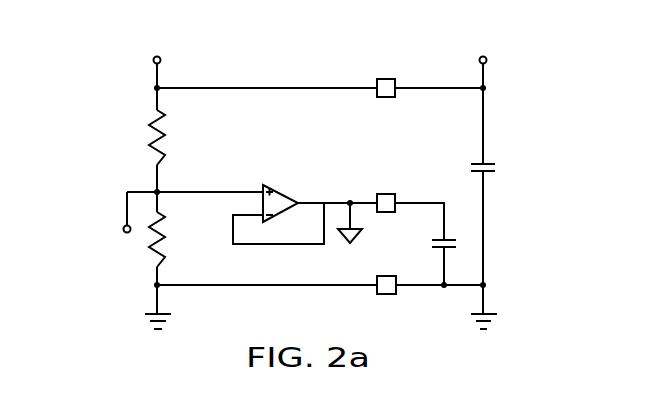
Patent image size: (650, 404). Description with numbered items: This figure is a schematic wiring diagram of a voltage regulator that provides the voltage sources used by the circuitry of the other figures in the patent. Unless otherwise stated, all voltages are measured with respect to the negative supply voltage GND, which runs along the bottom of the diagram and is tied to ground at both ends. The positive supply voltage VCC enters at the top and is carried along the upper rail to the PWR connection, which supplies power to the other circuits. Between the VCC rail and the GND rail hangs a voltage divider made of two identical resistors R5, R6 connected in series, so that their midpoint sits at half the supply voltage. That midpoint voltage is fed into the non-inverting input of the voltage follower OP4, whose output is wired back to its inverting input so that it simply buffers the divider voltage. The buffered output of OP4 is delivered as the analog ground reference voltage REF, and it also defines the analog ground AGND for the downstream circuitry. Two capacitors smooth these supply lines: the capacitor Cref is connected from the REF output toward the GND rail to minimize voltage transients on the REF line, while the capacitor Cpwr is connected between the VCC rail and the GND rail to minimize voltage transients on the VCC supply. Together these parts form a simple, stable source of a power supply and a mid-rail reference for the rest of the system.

The positive supply voltage VCC is at (319, 51).
The resistor R5 is at (142, 137).
The resistor R6 is at (170, 239).
The voltage follower OP4 is at (278, 207).
The PWR line PWR is at (379, 75).
The analog ground reference voltage REF is at (378, 193).
The negative supply voltage GND is at (384, 297).
The analog ground AGND is at (354, 234).
The capacitor Cref is at (423, 235).
The capacitor Cpwr is at (498, 156).